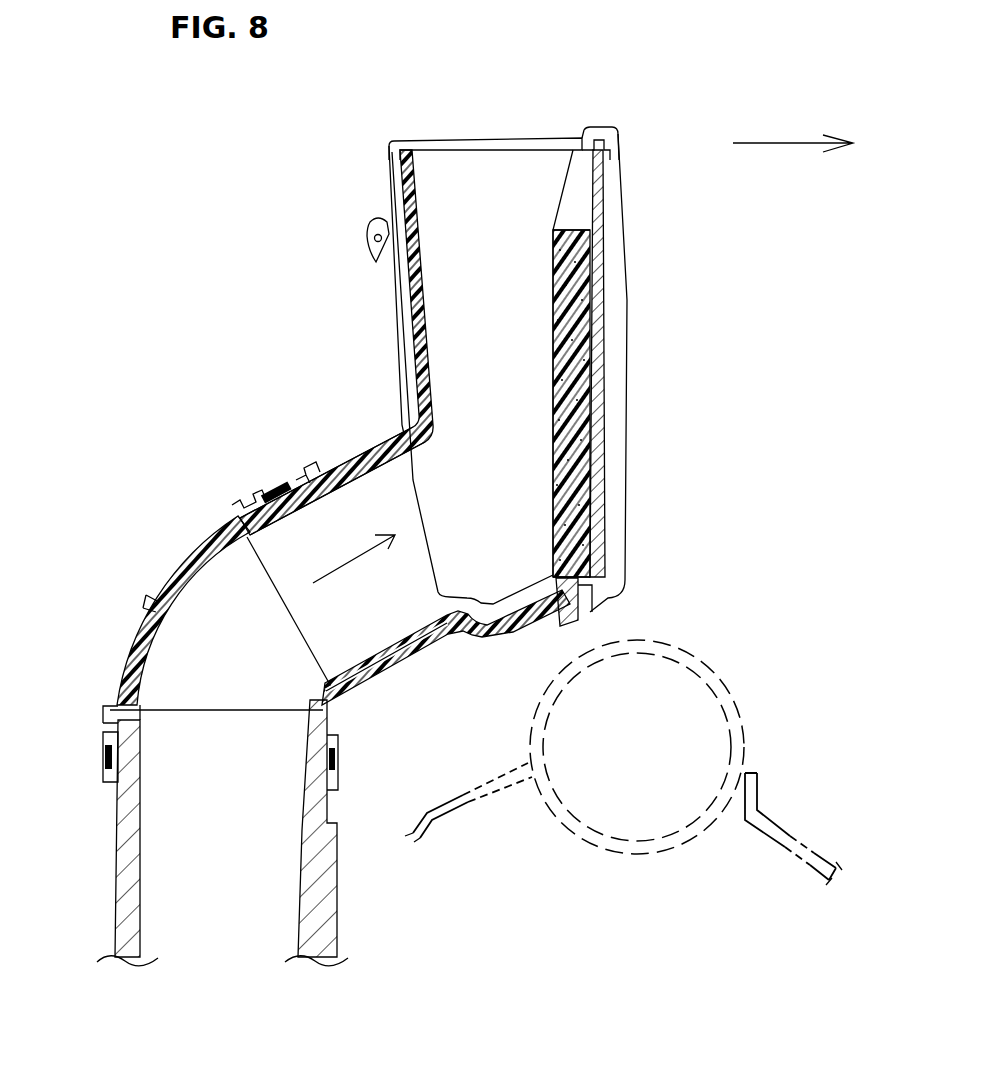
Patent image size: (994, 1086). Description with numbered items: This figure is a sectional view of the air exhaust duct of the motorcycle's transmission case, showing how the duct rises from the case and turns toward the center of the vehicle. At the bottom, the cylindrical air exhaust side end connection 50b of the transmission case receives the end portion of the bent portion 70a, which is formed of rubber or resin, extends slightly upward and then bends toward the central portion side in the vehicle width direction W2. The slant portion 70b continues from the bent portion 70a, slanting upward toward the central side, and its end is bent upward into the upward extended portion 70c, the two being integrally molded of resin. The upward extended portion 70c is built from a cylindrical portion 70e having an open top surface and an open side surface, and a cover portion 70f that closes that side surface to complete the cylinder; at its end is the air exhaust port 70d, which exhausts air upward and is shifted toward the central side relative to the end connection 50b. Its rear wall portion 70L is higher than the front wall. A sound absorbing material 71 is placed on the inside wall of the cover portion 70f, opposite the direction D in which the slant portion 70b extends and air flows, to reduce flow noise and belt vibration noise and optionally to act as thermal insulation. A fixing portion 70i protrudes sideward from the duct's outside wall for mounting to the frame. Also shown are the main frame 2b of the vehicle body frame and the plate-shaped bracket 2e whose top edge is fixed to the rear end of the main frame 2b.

The air exhaust port 70d is at (413, 188).
The rear wall portion 70L is at (528, 140).
The fixing portion 70i is at (370, 232).
The upward extended portion 70c is at (270, 277).
The cylindrical portion 70e is at (418, 310).
The cover portion 70f is at (588, 342).
The sound absorbing material 71 is at (560, 327).
The slant portion 70b is at (335, 475).
The bent portion 70a is at (150, 592).
The air exhaust side end connection 50b is at (122, 835).
The main frame 2b is at (720, 660).
The bracket 2e is at (468, 785).
The vehicle width direction W2 is at (795, 142).
The direction in which slant portion extends D is at (372, 555).